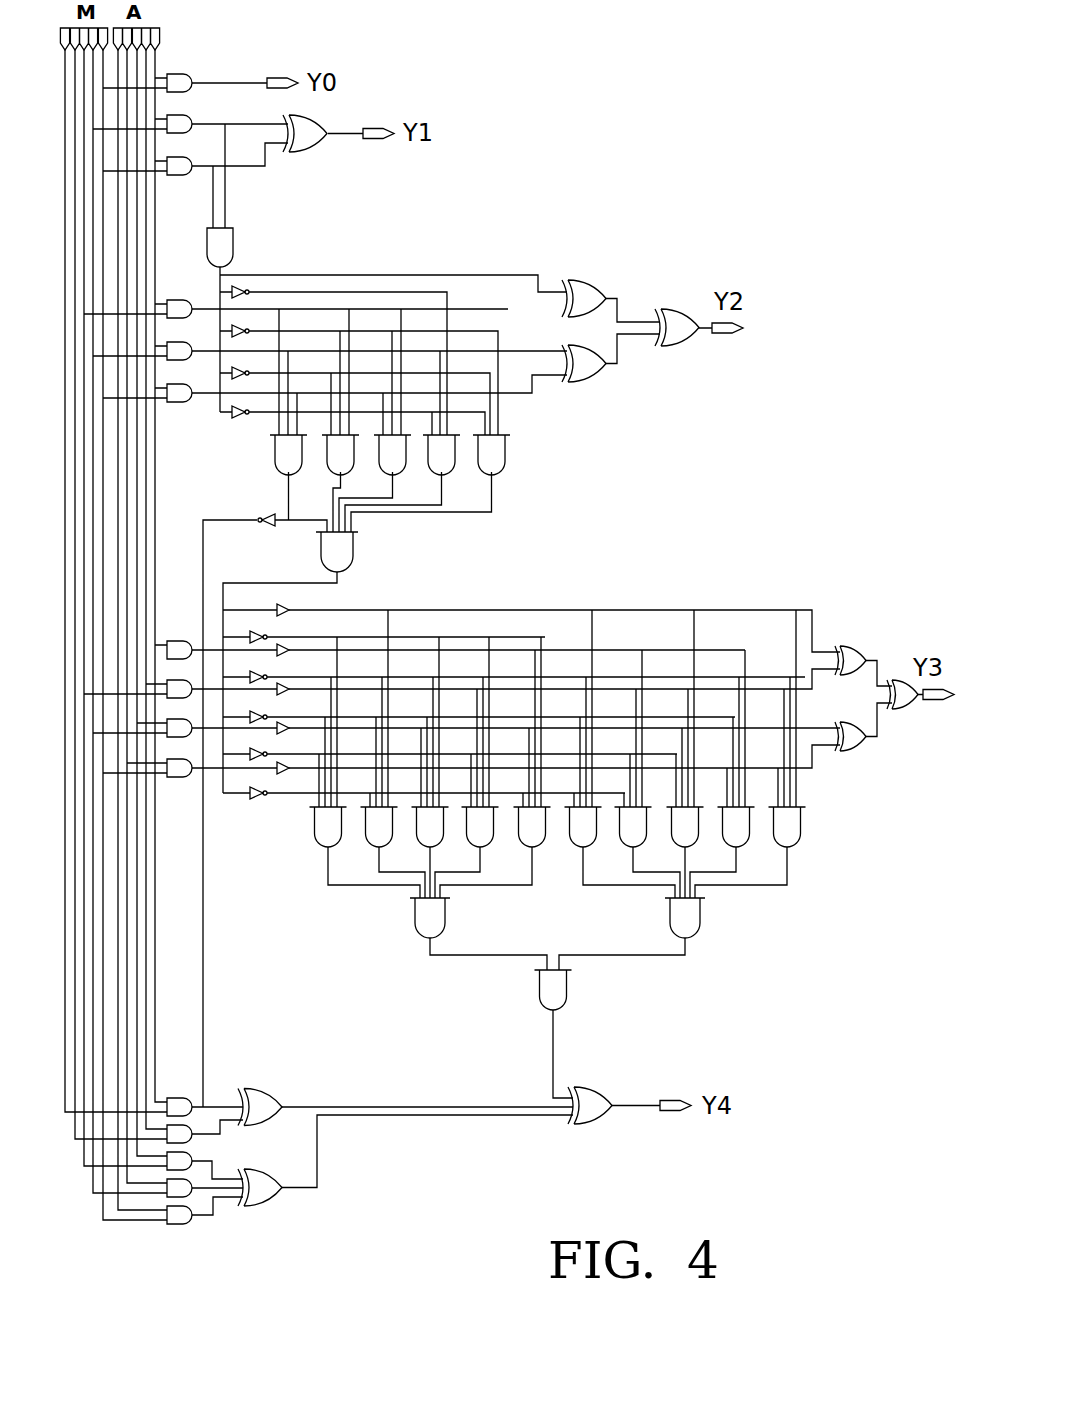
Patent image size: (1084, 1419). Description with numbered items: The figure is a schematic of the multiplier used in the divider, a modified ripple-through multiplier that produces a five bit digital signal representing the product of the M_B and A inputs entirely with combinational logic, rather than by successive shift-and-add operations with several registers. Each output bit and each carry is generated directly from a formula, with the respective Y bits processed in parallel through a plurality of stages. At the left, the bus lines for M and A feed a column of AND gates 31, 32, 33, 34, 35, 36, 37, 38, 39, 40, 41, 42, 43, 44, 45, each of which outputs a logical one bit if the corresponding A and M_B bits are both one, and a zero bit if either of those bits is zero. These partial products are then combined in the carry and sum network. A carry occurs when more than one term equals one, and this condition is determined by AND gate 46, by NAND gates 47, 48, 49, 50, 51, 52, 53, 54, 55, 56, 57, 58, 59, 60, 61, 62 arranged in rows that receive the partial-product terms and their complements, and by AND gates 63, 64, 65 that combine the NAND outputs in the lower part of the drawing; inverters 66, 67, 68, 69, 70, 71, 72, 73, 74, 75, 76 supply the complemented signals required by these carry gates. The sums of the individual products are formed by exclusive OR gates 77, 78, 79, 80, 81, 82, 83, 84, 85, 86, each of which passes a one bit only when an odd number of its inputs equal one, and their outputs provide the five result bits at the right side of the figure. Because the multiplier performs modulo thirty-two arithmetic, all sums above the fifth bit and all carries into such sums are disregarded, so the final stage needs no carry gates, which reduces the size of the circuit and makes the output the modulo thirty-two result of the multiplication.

The AND gate 31 is at (177, 80).
The AND gate 32 is at (178, 126).
The AND gate 33 is at (176, 168).
The AND gate 34 is at (176, 302).
The AND gate 35 is at (173, 352).
The AND gate 36 is at (176, 393).
The AND gate 37 is at (172, 646).
The AND gate 38 is at (182, 685).
The AND gate 39 is at (170, 738).
The AND gate 40 is at (186, 776).
The AND gate 41 is at (178, 1104).
The AND gate 42 is at (180, 1133).
The AND gate 43 is at (180, 1159).
The AND gate 44 is at (183, 1189).
The AND gate 45 is at (178, 1223).
The AND gate 46 is at (222, 248).
The NAND gate 47 is at (288, 456).
The NAND gate 48 is at (337, 456).
The NAND gate 49 is at (392, 460).
The NAND gate 50 is at (443, 458).
The NAND gate 51 is at (500, 453).
The NAND gate 52 is at (342, 545).
The NAND gate 53 is at (318, 823).
The NAND gate 54 is at (372, 830).
The NAND gate 55 is at (425, 825).
The NAND gate 56 is at (475, 825).
The NAND gate 57 is at (530, 828).
The NAND gate 58 is at (583, 830).
The NAND gate 59 is at (635, 828).
The NAND gate 60 is at (685, 828).
The NAND gate 61 is at (735, 828).
The NAND gate 62 is at (790, 828).
The AND gate 63 is at (427, 917).
The AND gate 64 is at (690, 915).
The AND gate 65 is at (560, 990).
The inverter 66 is at (264, 506).
The inverter 67 is at (258, 636).
The inverter 68 is at (264, 677).
The inverter 69 is at (264, 717).
The inverter 70 is at (264, 755).
The inverter 71 is at (256, 798).
The inverter 72 is at (282, 609).
The inverter 73 is at (287, 650).
The inverter 74 is at (283, 688).
The inverter 75 is at (283, 727).
The inverter 76 is at (280, 773).
The exclusive OR gate 77 is at (304, 132).
The exclusive OR gate 78 is at (582, 293).
The exclusive OR gate 79 is at (586, 372).
The exclusive OR gate 80 is at (678, 338).
The exclusive OR gate 81 is at (850, 648).
The exclusive OR gate 82 is at (853, 742).
The exclusive OR gate 83 is at (902, 687).
The exclusive OR gate 84 is at (258, 1103).
The exclusive OR gate 85 is at (262, 1197).
The exclusive OR gate 86 is at (592, 1110).